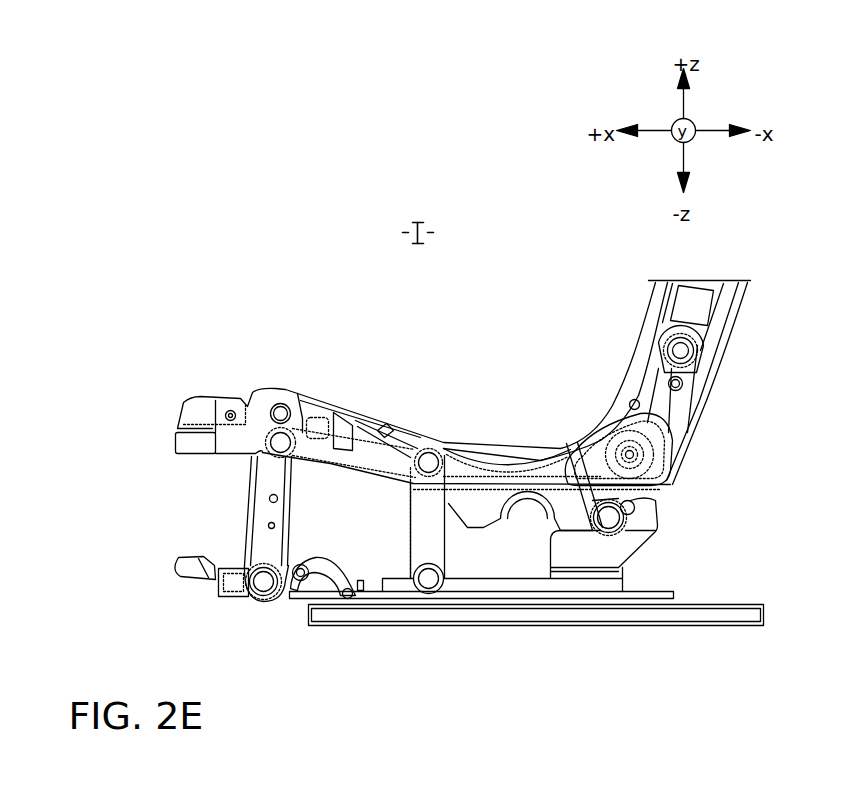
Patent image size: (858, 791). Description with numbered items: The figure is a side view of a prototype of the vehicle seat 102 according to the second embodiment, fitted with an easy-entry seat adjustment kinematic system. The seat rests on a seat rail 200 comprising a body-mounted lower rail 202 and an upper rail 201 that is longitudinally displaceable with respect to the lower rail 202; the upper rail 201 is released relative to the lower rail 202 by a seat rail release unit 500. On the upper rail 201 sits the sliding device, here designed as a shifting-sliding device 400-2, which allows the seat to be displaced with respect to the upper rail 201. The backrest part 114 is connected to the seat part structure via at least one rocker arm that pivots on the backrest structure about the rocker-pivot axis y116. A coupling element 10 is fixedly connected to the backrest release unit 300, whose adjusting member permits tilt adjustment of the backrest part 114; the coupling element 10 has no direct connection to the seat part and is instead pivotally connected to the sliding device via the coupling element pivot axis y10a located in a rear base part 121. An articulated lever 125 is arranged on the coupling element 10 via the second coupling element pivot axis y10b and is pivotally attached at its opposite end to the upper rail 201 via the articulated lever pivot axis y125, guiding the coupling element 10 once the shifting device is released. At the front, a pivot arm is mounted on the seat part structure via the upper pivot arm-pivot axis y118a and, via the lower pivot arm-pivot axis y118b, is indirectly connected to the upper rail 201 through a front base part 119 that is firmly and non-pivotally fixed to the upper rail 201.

The vehicle seat 102 is at (521, 238).
The backrest part 114 is at (659, 291).
The rocker-pivot axis y116 is at (682, 350).
The backrest release unit 300 is at (630, 454).
The coupling element 10 is at (594, 494).
The coupling element pivot axis y10a is at (609, 517).
The rear base part 121 is at (599, 552).
The shifting-sliding device 400-2 is at (566, 583).
The upper rail 201 is at (674, 594).
The seat rail 200 is at (798, 600).
The lower rail 202 is at (732, 613).
The articulated lever pivot axis y125 is at (429, 579).
The articulated lever 125 is at (434, 526).
The second coupling element pivot axis y10b is at (428, 461).
The upper pivot arm-pivot axis y118a is at (279, 443).
The front base part 119 is at (252, 525).
The lower pivot arm-pivot axis y118b is at (262, 582).
The seat rail release unit 500 is at (236, 593).